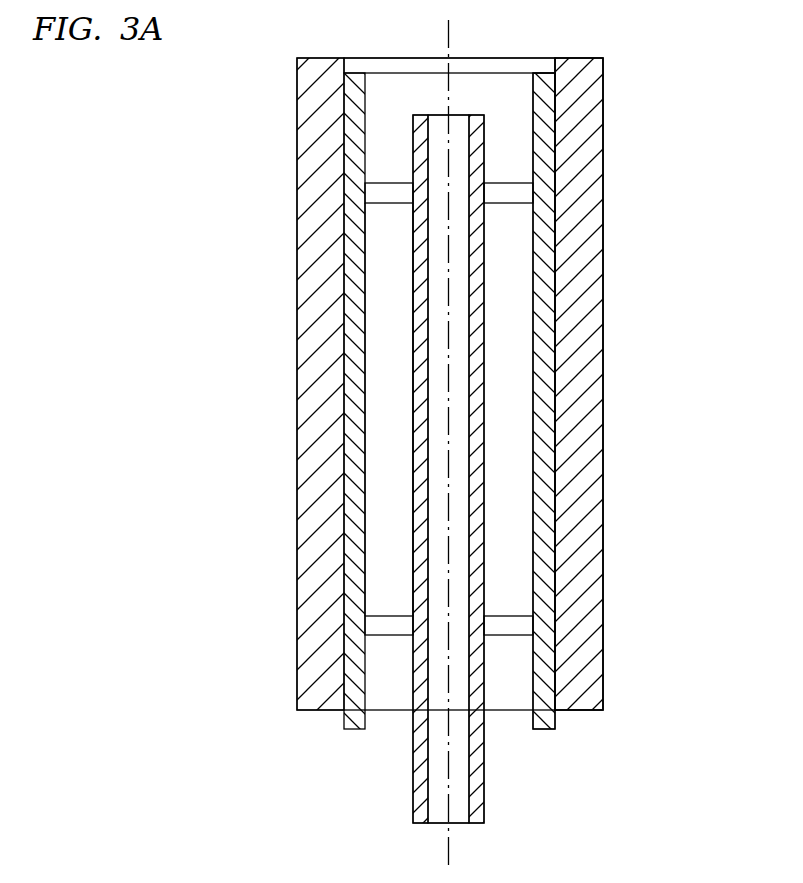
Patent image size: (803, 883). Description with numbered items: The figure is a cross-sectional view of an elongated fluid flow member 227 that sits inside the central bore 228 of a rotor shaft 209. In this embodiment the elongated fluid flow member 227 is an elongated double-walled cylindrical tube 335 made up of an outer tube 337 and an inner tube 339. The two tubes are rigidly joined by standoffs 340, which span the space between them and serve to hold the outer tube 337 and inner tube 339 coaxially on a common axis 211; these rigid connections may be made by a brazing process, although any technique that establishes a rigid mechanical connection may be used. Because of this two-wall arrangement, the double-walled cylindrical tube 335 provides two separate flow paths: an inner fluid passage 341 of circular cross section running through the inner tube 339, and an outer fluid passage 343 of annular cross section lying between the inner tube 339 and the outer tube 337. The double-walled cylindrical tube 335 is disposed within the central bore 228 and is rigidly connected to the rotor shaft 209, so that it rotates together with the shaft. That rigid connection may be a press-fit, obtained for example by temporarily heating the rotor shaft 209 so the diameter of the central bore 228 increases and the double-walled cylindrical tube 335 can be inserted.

The common axis 211 is at (448, 37).
The elongated fluid flow member 227 is at (614, 91).
The central bore 228 is at (558, 115).
The rotor shaft 209 is at (587, 335).
The outer tube 337 is at (542, 395).
The inner tube 339 is at (477, 440).
The inner fluid passage 341 is at (440, 452).
The outer fluid passage 343 is at (385, 485).
The standoffs 340 is at (524, 623).
The double-walled cylindrical tube 335 is at (570, 736).